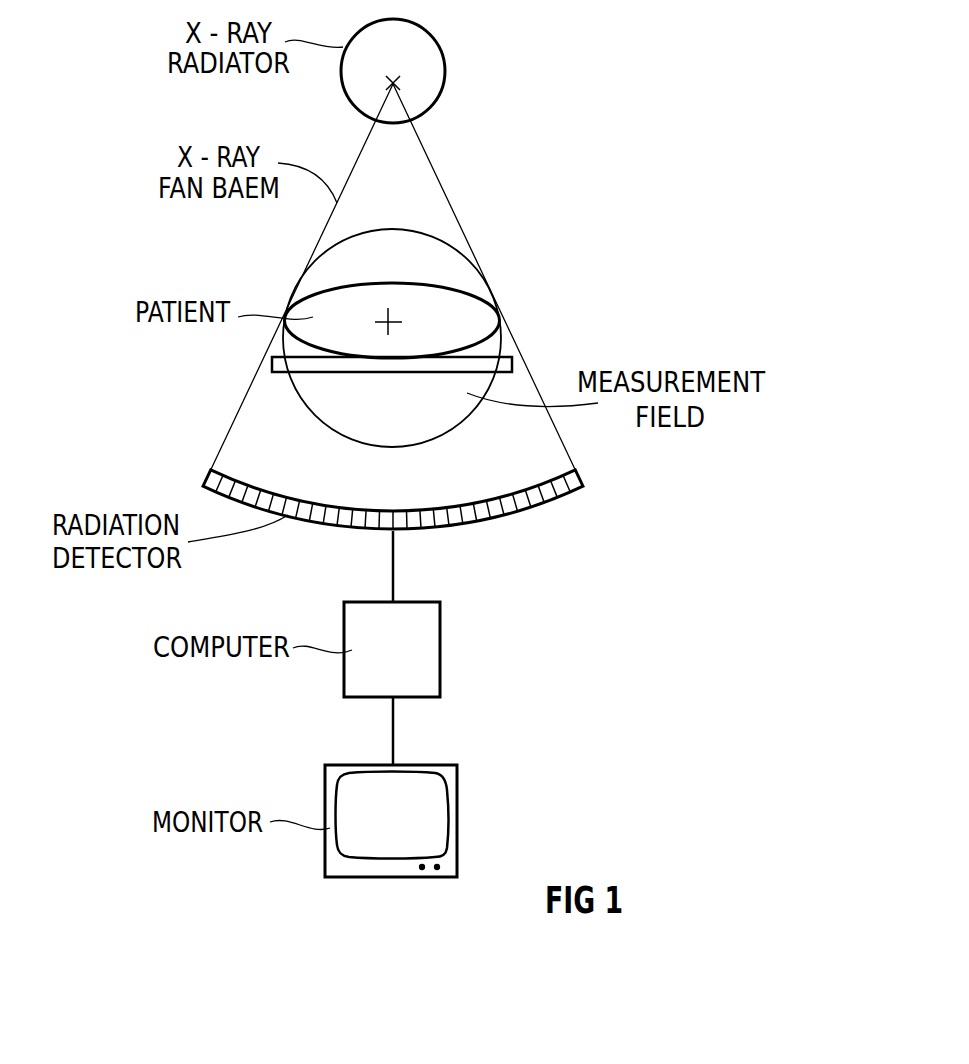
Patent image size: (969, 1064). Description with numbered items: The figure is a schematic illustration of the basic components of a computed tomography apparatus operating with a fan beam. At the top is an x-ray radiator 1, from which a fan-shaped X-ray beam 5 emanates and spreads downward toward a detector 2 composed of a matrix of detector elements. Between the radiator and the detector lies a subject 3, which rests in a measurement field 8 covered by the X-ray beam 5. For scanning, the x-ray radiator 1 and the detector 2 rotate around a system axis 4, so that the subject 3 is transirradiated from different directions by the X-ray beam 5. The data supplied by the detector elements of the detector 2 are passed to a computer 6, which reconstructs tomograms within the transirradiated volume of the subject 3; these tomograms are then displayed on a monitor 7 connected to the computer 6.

The x-ray radiator 1 is at (438, 40).
The detector 2 is at (508, 515).
The subject 3 is at (330, 288).
The system axis 4 is at (390, 315).
The fan-shaped X-ray beam 5 is at (457, 220).
The computer 6 is at (440, 650).
The monitor 7 is at (457, 818).
The measurement field 8 is at (457, 427).